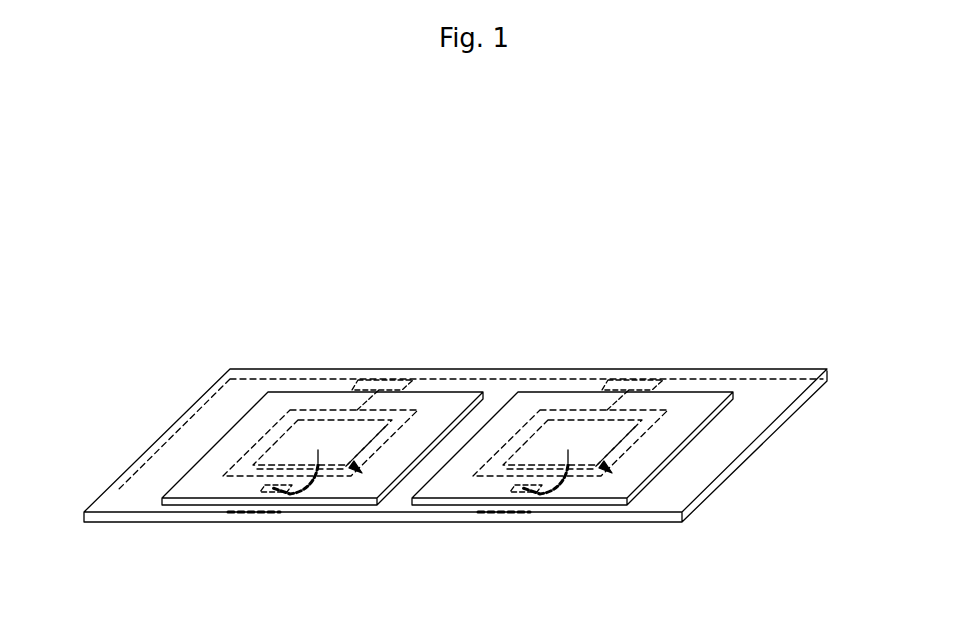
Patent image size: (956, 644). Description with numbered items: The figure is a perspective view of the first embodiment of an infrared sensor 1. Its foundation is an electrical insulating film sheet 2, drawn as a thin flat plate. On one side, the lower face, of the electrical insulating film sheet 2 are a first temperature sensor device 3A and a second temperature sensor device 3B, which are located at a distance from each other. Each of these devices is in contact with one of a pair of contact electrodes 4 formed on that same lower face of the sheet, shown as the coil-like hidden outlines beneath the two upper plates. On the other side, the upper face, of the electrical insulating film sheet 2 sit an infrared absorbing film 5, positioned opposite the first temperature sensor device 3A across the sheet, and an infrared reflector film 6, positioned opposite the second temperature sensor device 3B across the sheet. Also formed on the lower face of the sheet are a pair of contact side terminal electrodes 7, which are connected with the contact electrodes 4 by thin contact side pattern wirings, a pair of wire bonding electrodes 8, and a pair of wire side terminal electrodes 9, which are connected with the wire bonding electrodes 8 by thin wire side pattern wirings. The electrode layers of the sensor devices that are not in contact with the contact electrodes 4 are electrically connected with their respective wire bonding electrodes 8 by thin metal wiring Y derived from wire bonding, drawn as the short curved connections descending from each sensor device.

The infrared sensor 1 is at (621, 284).
The electrical insulating film sheet 2 is at (122, 523).
The first temperature sensor device 3A is at (323, 432).
The second temperature sensor device 3B is at (575, 435).
The contact electrodes 4 is at (258, 439).
The infrared absorbing film 5 is at (425, 396).
The infrared reflector film 6 is at (676, 401).
The contact side terminal electrodes 7 is at (405, 378).
The wire bonding electrodes 8 is at (262, 488).
The wire side terminal electrodes 9 is at (252, 515).
The thin metal wiring Y is at (316, 470).